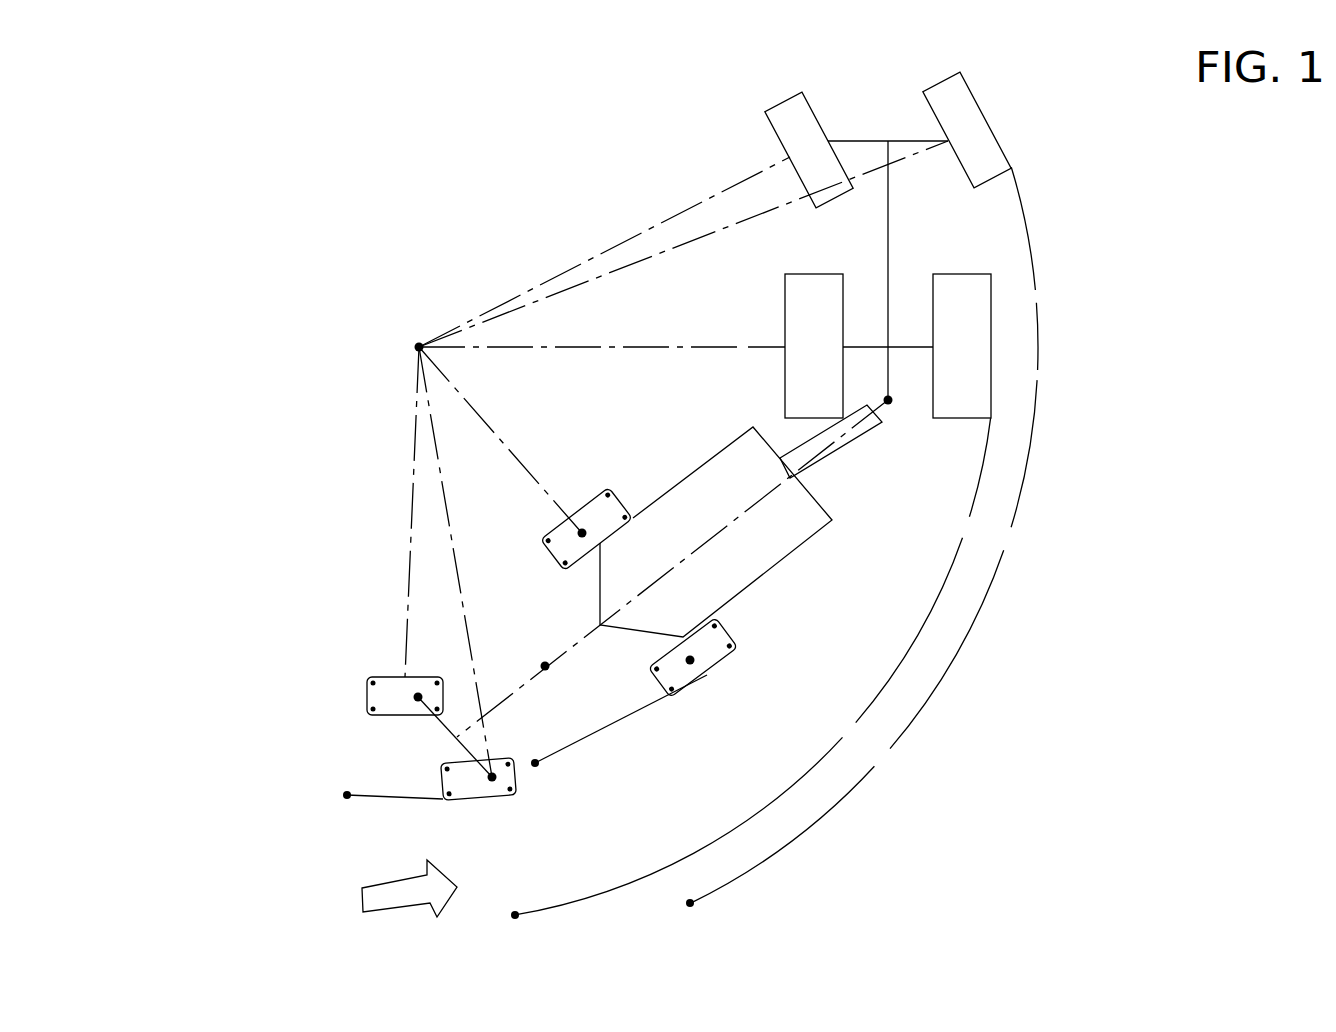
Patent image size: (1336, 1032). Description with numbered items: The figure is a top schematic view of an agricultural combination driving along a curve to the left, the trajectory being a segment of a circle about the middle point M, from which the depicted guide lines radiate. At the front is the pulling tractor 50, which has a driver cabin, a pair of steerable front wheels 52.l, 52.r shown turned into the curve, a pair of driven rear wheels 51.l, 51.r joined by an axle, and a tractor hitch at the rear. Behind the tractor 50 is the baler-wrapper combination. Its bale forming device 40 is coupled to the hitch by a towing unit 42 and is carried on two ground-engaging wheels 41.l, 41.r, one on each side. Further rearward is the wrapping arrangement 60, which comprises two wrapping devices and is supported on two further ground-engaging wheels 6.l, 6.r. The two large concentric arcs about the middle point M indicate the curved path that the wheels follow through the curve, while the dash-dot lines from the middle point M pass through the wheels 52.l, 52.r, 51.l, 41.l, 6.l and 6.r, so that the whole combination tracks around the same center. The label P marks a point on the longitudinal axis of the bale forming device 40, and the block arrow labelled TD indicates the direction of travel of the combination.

The middle point M is at (412, 332).
The steerable front wheel 52.l is at (813, 158).
The steerable front wheel 52.r is at (958, 109).
The pulling tractor 50 is at (973, 223).
The driven rear wheel 51.l is at (810, 337).
The driven rear wheel 51.r is at (957, 348).
The towing unit 42 is at (858, 435).
The bale forming device 40 is at (753, 557).
The ground-engaging wheel 41.l is at (560, 543).
The ground-engaging wheel 41.r is at (680, 673).
The further ground-engaging wheel 6.l is at (387, 690).
The further ground-engaging wheel 6.r is at (458, 775).
The wrapping arrangement 60 is at (388, 753).
The pivot axis / reference point P is at (541, 690).
The travel direction TD is at (405, 893).